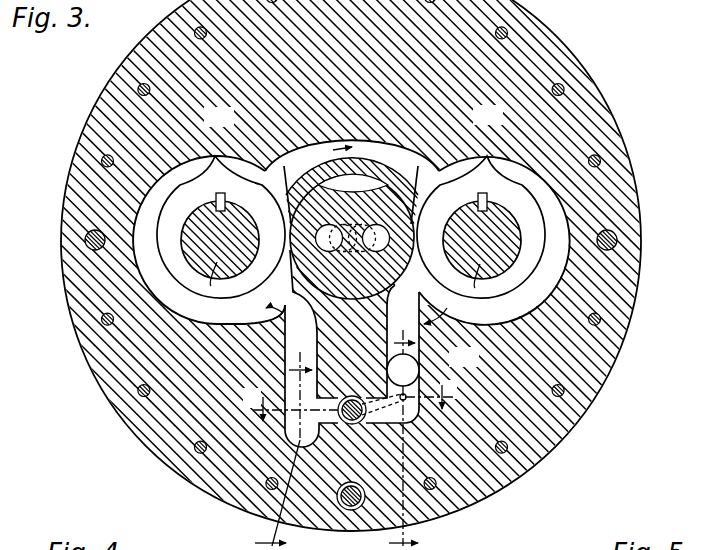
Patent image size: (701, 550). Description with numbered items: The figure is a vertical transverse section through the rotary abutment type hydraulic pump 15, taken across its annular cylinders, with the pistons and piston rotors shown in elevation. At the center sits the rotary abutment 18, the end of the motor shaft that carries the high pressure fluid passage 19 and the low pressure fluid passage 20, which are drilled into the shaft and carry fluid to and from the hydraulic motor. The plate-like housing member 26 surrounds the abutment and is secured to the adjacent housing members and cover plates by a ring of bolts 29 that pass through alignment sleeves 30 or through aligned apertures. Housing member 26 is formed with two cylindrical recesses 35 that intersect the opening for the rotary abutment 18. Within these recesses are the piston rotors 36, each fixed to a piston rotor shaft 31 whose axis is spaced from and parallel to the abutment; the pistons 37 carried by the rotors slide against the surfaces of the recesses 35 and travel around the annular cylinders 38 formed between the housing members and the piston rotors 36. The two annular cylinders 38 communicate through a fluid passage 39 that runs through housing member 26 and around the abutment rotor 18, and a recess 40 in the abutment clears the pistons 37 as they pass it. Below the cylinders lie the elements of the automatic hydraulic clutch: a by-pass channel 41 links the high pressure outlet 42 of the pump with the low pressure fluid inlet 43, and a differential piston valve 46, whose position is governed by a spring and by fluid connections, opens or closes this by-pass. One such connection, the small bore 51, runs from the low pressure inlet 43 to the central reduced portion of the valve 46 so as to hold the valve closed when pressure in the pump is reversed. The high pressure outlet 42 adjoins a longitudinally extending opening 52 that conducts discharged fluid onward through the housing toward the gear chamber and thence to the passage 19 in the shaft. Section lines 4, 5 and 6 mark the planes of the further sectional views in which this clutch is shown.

The rotary hydraulic pump 15 is at (573, 53).
The rotary abutment 18 is at (408, 205).
The fluid passage 19 is at (389, 238).
The fluid passage 20 is at (318, 238).
The housing member 26 is at (596, 110).
The bolts 29 is at (140, 391).
The alignment sleeves 30 is at (85, 239).
The piston rotor shafts 31 is at (351, 282).
The cylindrical recesses 35 is at (150, 274).
The piston rotors 36 is at (173, 208).
The pistons 37 is at (216, 161).
The annular cylinders 38 is at (545, 287).
The fluid passage 39 is at (290, 173).
The recess 40 is at (353, 189).
The by-pass channel 41 is at (332, 413).
The high pressure outlet 42 is at (423, 320).
The low pressure fluid inlet 43 is at (285, 348).
The differential piston valve 46 is at (350, 420).
The small bore 51 is at (377, 423).
The longitudinally extending opening 52 is at (414, 362).
The section line 4- 4 is at (403, 437).
The section line 5- 5 is at (283, 450).
The section line 6- 6 is at (350, 400).